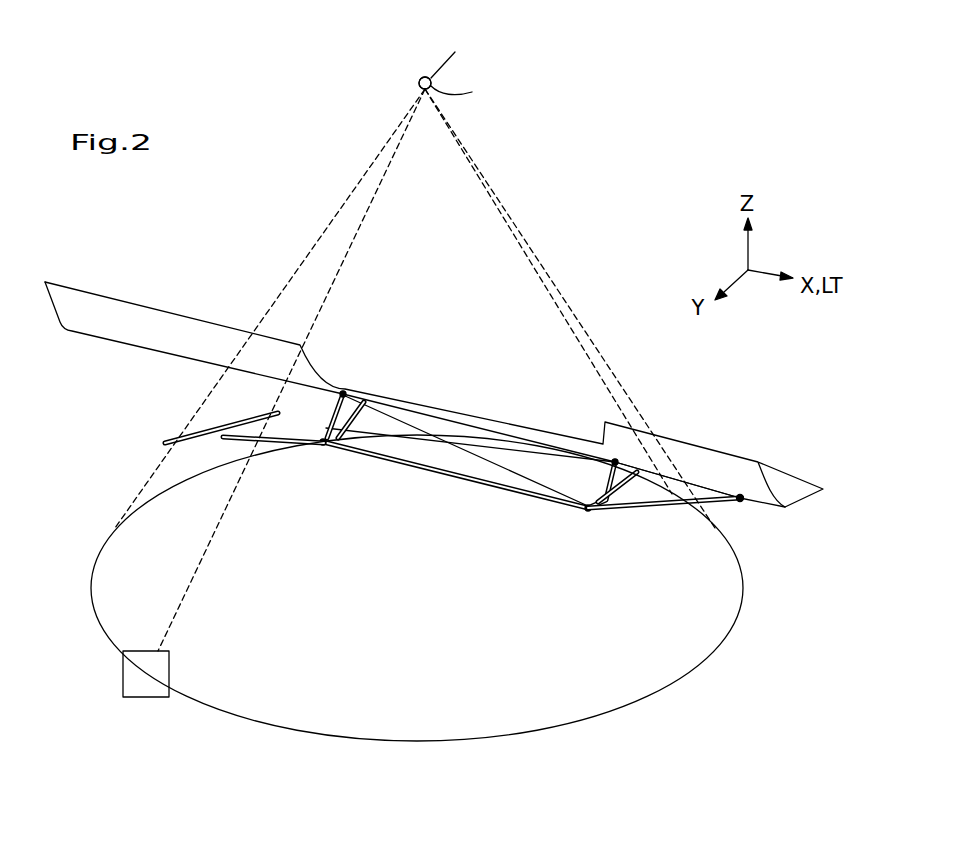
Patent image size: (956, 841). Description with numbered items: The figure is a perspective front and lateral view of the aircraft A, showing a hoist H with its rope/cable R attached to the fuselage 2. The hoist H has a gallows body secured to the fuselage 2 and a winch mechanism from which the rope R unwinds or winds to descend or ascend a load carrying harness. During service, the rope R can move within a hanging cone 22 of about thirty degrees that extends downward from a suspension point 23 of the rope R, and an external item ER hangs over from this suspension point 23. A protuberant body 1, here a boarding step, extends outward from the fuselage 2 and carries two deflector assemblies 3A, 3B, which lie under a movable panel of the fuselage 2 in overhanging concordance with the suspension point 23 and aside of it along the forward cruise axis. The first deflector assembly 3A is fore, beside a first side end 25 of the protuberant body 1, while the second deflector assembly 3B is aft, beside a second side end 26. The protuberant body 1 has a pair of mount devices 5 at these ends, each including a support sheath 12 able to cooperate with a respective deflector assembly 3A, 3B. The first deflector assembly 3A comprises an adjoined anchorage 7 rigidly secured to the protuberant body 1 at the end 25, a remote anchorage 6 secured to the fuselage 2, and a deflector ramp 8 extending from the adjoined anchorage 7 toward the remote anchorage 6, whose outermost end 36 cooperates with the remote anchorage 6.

The protuberant body 1 is at (485, 505).
The fuselage 2 is at (815, 458).
The first deflector assembly 3A is at (750, 553).
The second deflector assembly 3B is at (273, 463).
The mount device 5 is at (368, 419).
The remote anchorage 6 is at (748, 435).
The outermost end 36 is at (734, 474).
The adjoined anchorage 7 is at (586, 534).
The deflector ramp 8 is at (638, 508).
The support sheath 12 is at (372, 367).
The first side end 25 is at (597, 533).
The second side end 26 is at (345, 370).
The hanging cone 22 is at (635, 700).
The suspension point 23 is at (403, 86).
The hoist H is at (445, 66).
The rope/cable R is at (323, 226).
The external item ER is at (146, 674).
The aircraft A is at (177, 208).